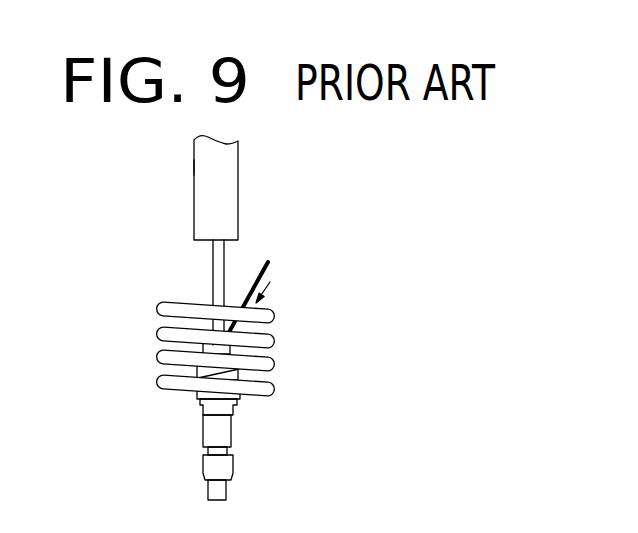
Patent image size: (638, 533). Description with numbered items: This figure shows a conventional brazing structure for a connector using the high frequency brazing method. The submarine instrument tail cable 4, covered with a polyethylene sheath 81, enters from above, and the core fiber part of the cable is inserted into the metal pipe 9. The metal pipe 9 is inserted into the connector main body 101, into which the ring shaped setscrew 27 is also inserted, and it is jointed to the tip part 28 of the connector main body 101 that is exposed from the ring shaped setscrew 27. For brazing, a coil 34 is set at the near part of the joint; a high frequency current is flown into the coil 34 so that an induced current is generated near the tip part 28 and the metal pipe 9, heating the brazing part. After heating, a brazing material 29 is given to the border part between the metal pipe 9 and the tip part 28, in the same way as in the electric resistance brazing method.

The submarine instrument tail cable 4 is at (243, 165).
The polyethylene sheath 81 is at (205, 166).
The metal pipe 9 is at (211, 274).
The brazing material 29 is at (272, 263).
The tip part 28 is at (265, 352).
The coil 34 is at (275, 365).
The ring shaped setscrew 27 is at (196, 396).
The connector main body 101 is at (233, 430).